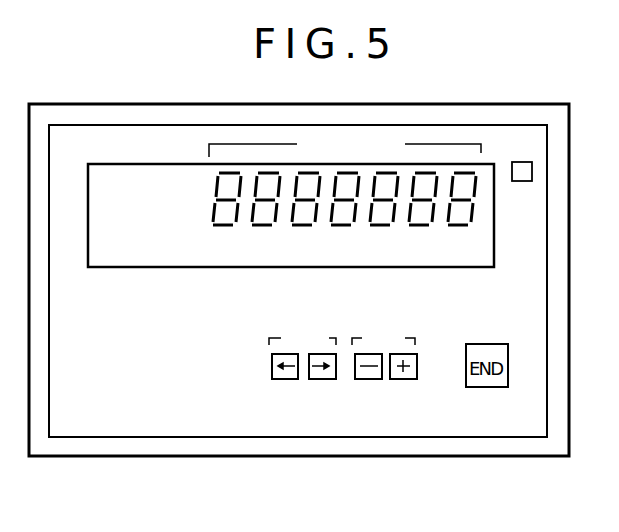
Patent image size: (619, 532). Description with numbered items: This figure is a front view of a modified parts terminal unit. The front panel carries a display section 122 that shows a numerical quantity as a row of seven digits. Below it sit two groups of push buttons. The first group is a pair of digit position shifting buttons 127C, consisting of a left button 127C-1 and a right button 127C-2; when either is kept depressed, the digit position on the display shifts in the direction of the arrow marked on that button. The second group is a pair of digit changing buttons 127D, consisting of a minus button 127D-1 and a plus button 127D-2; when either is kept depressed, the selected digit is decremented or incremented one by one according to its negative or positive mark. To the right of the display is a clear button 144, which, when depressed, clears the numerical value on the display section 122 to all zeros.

The display section 122 is at (399, 175).
The clear button 144 is at (532, 172).
The digit position shifting buttons 127C is at (292, 425).
The digit position shifting button 127C-1 is at (288, 379).
The digit position shifting button 127C-2 is at (328, 379).
The digit changing buttons 127D is at (436, 425).
The digit changing button 127D-1 is at (368, 379).
The digit changing button 127D-2 is at (418, 379).